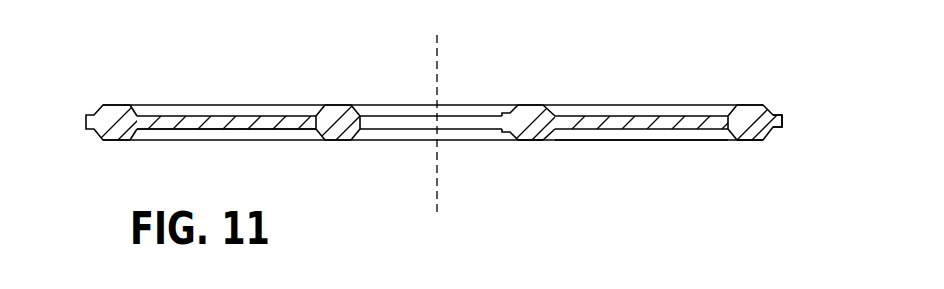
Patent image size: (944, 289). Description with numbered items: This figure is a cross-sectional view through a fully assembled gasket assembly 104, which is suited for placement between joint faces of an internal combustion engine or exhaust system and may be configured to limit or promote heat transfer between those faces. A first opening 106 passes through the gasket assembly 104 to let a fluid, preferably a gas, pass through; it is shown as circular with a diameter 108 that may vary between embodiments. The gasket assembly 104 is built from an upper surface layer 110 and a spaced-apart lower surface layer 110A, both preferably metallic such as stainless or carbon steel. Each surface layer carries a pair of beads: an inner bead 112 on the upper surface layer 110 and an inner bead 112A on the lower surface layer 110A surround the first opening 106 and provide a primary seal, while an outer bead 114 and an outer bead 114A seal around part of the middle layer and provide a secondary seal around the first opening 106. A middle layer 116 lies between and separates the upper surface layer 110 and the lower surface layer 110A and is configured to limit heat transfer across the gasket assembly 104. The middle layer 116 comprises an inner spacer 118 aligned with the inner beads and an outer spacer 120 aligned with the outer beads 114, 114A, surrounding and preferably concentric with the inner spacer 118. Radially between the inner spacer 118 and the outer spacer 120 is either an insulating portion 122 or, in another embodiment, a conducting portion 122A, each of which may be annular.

The gasket assembly 104 is at (104, 80).
The first opening 106 is at (447, 123).
The diameter 108 is at (372, 119).
The upper surface layer 110 is at (627, 105).
The lower surface layer 110A is at (655, 141).
The inner bead 112 is at (533, 105).
The inner bead 112A is at (530, 141).
The outer bead 114 is at (753, 105).
The outer bead 114A is at (754, 141).
The middle layer 116 is at (783, 121).
The inner spacer 118 is at (341, 120).
The outer spacer 120 is at (113, 127).
The insulating portion 122 is at (226, 91).
The conducting portion 122A is at (212, 105).